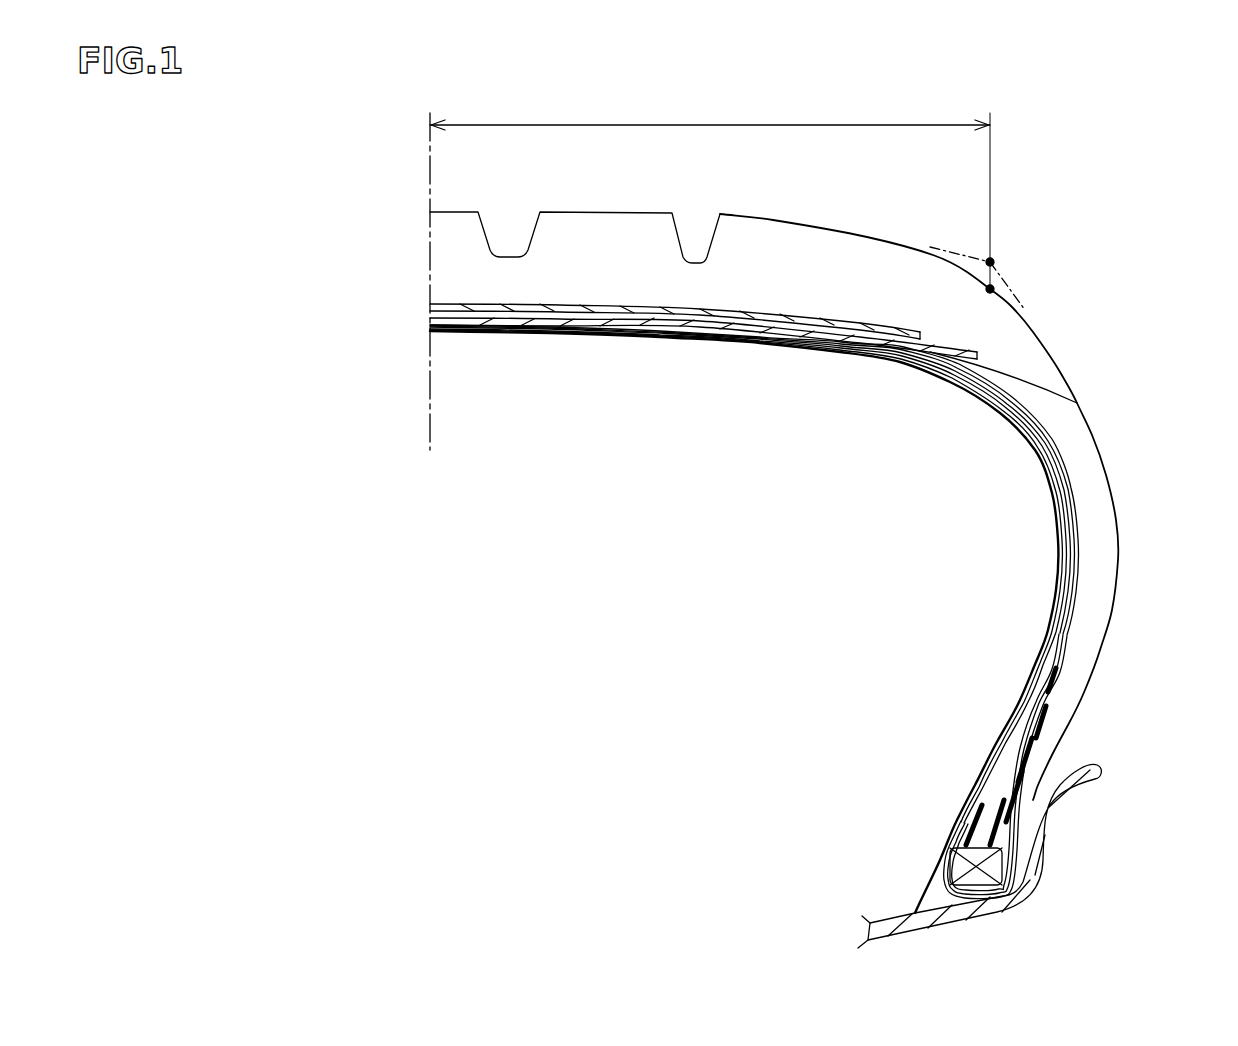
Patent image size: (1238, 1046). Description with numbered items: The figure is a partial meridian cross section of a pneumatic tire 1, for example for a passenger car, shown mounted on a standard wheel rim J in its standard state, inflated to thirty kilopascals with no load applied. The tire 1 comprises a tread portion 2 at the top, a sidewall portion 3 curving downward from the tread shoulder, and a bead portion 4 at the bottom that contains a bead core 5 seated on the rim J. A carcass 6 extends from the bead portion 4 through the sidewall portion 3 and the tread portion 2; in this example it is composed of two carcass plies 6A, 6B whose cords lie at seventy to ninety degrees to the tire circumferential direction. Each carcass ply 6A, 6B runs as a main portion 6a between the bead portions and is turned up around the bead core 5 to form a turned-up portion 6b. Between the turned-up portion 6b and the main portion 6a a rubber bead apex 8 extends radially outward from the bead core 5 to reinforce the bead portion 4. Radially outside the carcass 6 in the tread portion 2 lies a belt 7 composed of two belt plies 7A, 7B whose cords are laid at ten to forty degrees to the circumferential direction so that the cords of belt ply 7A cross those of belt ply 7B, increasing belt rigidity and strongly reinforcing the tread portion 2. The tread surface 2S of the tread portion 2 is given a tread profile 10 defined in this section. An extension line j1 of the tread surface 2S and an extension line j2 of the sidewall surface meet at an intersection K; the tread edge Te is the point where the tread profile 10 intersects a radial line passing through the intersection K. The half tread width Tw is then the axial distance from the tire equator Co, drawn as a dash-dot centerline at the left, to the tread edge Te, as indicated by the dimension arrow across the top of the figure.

The tire 1 is at (826, 537).
The tread portion 2 is at (710, 215).
The tread surface 2S is at (710, 215).
The tread profile 10 is at (606, 212).
The sidewall portion 3 is at (1138, 528).
The bead portion 4 is at (941, 884).
The bead core 5 is at (975, 868).
The carcass 6 is at (818, 619).
The carcass ply 6A is at (748, 614).
The carcass ply 6B is at (818, 516).
The main portion 6a is at (1032, 697).
The turned-up portion 6b is at (1070, 667).
The belt 7 is at (703, 384).
The belt ply 7A is at (473, 313).
The belt ply 7B is at (540, 306).
The rubber bead apex 8 is at (1000, 777).
The tire equator Co is at (426, 269).
The half tread width Tw is at (710, 192).
The tread edge Te is at (985, 308).
The intersection K is at (994, 256).
The extension line of the tread surface j1 is at (953, 253).
The extension line of the sidewall surface j2 is at (1013, 300).
The standard wheel rim J is at (880, 920).